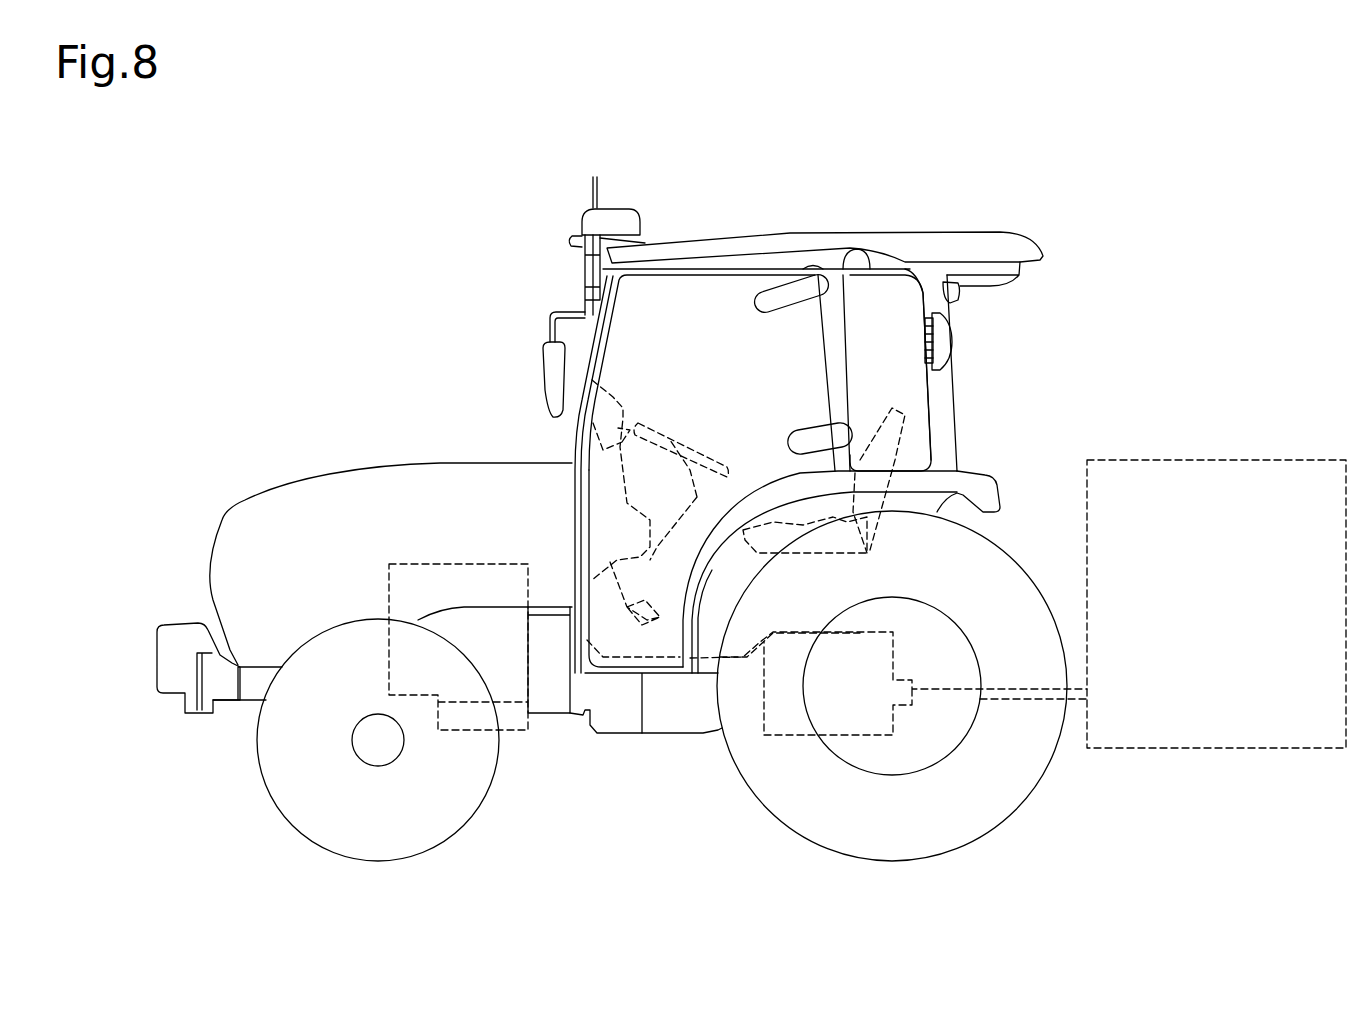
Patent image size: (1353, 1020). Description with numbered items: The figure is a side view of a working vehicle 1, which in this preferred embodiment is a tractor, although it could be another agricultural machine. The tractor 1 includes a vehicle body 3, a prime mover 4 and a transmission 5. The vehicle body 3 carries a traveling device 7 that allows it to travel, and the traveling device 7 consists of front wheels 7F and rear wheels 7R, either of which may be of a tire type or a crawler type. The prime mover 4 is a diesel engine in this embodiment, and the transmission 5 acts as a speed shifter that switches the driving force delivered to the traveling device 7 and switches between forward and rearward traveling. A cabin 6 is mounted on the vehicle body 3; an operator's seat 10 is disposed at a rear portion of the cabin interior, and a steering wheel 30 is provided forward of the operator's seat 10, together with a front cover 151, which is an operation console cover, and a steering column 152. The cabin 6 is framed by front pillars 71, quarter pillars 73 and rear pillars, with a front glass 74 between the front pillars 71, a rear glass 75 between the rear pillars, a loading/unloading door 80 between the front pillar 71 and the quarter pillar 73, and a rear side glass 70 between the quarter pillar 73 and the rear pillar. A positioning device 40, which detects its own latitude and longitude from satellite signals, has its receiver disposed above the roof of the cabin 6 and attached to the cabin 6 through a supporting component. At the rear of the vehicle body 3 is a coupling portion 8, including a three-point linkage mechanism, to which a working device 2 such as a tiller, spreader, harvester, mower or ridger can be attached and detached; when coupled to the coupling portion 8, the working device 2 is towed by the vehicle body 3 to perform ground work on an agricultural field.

The working vehicle 1 is at (1018, 198).
The working device 2 is at (1287, 458).
The vehicle body 3 is at (232, 706).
The prime mover 4 is at (437, 562).
The transmission 5 is at (648, 757).
The cabin 6 is at (982, 357).
The traveling device 7 is at (847, 893).
The front wheels 7F is at (445, 820).
The rear wheels 7R is at (862, 837).
The coupling portion 8 is at (1017, 707).
The operator's seat 10 is at (880, 435).
The steering wheel 30 is at (660, 425).
The positioning device 40 is at (647, 223).
The rear side glass 70 is at (880, 300).
The front pillar 71 is at (612, 310).
The quarter pillar 73 is at (830, 337).
The front glass 74 is at (585, 340).
The rear glass 75 is at (955, 387).
The loading/unloading door 80 is at (741, 262).
The front cover 151 is at (592, 381).
The steering column 152 is at (700, 497).